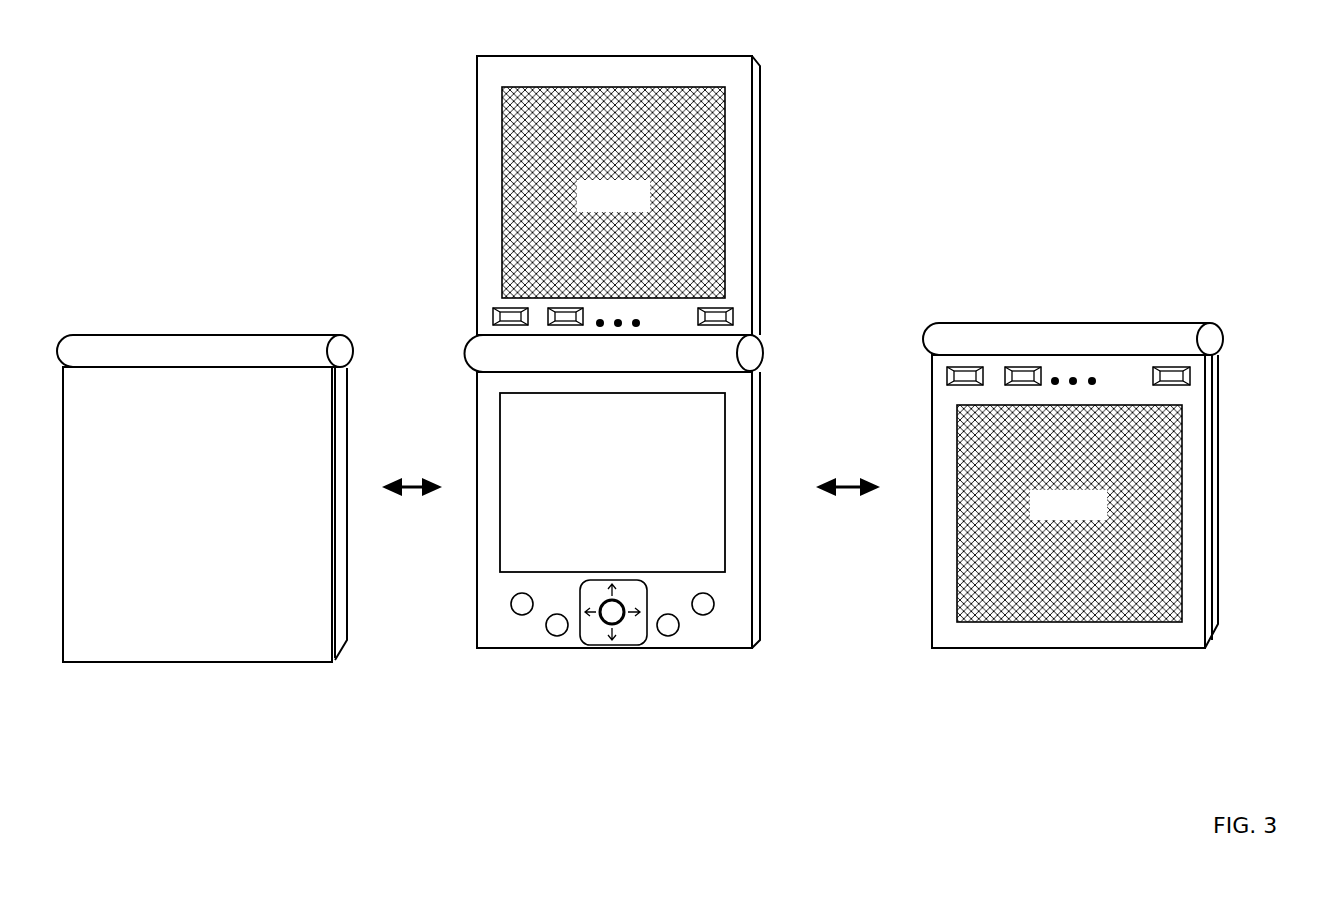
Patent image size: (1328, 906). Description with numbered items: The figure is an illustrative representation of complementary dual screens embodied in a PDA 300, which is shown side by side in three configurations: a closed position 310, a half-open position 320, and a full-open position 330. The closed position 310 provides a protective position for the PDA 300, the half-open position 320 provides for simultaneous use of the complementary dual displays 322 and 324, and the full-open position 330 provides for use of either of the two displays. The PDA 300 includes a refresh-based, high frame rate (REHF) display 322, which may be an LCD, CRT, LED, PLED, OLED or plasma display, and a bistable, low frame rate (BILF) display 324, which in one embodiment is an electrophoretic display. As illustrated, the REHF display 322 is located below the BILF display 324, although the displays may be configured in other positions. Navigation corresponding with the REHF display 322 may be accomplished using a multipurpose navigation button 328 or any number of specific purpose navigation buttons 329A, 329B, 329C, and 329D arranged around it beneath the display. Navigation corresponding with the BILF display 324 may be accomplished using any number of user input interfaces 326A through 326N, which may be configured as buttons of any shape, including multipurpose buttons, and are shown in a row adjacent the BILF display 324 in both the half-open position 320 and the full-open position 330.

The PDA 300 is at (339, 268).
The closed position 310 is at (205, 560).
The half-open position 320 is at (614, 420).
The full-open position 330 is at (1073, 554).
The refresh-based, high frame rate (REHF) display 322 is at (1287, 468).
The bistable, low frame rate (BILF) display 324 is at (842, 354).
The user input interface 326A is at (493, 317).
The user input interface 326N is at (733, 318).
The multipurpose navigation button 328 is at (640, 642).
The specific purpose navigation button 329A is at (511, 604).
The specific purpose navigation button 329B is at (549, 630).
The specific purpose navigation button 329C is at (677, 631).
The specific purpose navigation button 329D is at (715, 604).